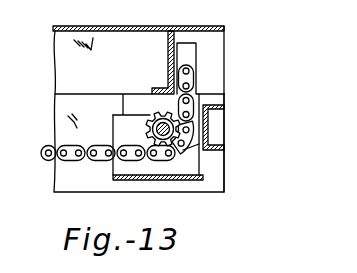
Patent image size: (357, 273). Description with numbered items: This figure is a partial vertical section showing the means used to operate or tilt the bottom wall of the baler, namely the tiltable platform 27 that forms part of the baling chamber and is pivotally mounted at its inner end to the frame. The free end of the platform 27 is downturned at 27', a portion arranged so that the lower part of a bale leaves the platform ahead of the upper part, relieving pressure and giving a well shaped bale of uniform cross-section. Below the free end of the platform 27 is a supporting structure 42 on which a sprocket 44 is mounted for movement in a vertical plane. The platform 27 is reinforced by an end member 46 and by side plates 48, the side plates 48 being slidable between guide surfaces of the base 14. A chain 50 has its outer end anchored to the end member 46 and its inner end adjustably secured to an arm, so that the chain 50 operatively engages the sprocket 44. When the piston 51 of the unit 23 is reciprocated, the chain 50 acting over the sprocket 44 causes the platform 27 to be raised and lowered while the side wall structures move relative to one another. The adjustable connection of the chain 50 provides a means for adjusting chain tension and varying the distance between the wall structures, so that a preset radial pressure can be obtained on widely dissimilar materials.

The base 14 is at (63, 181).
The unit 23 is at (232, 88).
The tiltable platform 27 is at (138, 17).
The downturned portion 27' is at (215, 48).
The supporting structure 42 is at (224, 128).
The sprocket 44 is at (151, 131).
The end member 46 is at (170, 41).
The side plate 48 is at (215, 51).
The chain 50 is at (52, 147).
The piston 51 is at (133, 100).